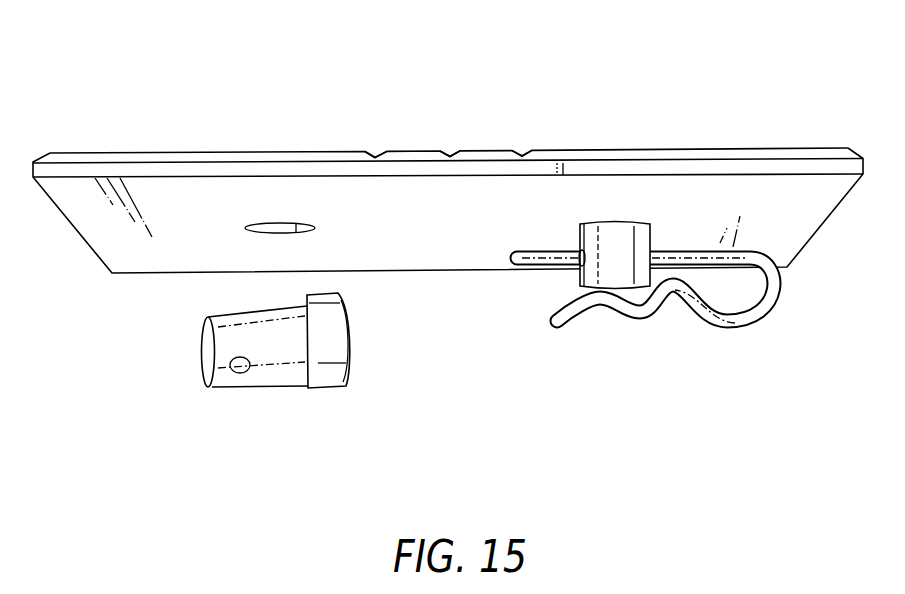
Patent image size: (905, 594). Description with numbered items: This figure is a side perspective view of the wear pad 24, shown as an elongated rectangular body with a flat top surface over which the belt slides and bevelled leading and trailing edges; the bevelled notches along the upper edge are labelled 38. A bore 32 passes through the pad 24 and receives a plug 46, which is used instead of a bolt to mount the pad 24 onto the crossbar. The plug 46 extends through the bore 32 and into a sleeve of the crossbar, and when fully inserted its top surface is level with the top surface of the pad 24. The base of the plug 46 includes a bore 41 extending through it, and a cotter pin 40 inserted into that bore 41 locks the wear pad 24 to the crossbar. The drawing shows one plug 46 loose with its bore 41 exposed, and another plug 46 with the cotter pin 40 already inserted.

The wear pad 24 is at (683, 152).
The notches 38 is at (522, 155).
The bore 32 is at (267, 232).
The cotter pin 40 is at (774, 313).
The plug 46 is at (297, 350).
The bore 41 is at (241, 373).